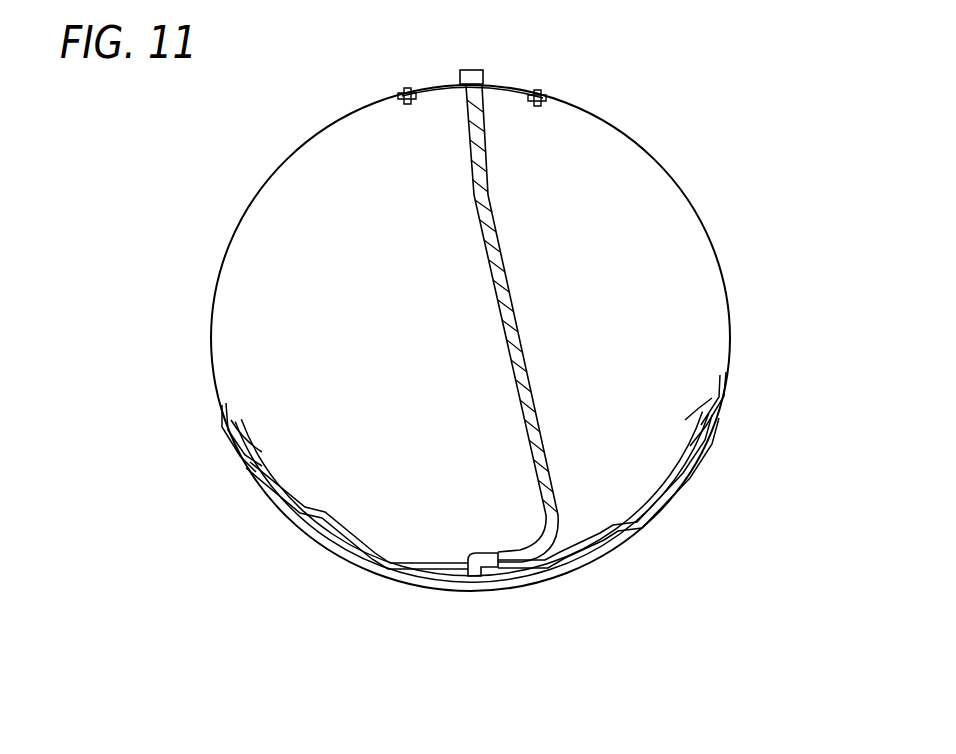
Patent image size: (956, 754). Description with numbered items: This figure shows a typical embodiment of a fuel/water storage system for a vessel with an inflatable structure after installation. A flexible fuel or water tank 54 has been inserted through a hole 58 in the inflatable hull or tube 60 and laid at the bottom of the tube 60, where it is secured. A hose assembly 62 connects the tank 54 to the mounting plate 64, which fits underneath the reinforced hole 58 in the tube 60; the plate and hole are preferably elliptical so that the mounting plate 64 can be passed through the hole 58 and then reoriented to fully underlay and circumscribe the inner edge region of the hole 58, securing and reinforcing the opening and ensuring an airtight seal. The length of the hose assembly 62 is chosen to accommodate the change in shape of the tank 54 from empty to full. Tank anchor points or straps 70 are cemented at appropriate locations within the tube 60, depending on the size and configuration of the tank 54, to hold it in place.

The flexible fuel or water tank 54 is at (682, 432).
The hole 58 is at (510, 50).
The inflatable hull or tube 60 is at (728, 252).
The hose assembly 62 is at (512, 200).
The mounting plate 64 is at (435, 85).
The tank anchor points or straps 70 is at (234, 425).